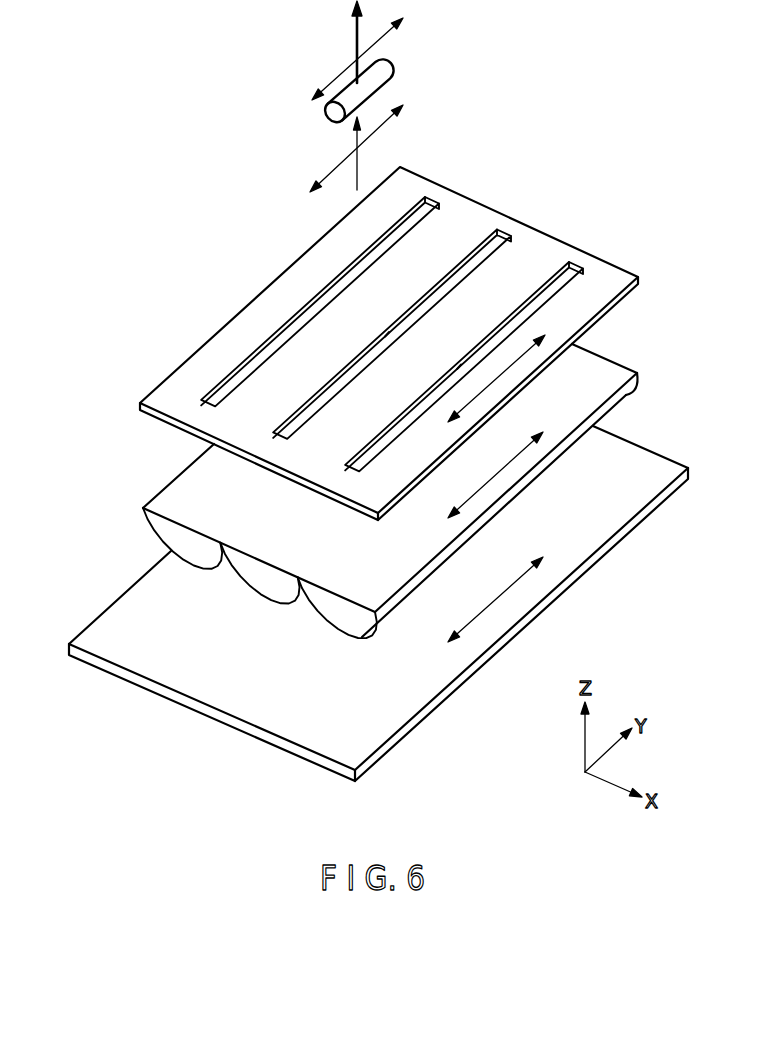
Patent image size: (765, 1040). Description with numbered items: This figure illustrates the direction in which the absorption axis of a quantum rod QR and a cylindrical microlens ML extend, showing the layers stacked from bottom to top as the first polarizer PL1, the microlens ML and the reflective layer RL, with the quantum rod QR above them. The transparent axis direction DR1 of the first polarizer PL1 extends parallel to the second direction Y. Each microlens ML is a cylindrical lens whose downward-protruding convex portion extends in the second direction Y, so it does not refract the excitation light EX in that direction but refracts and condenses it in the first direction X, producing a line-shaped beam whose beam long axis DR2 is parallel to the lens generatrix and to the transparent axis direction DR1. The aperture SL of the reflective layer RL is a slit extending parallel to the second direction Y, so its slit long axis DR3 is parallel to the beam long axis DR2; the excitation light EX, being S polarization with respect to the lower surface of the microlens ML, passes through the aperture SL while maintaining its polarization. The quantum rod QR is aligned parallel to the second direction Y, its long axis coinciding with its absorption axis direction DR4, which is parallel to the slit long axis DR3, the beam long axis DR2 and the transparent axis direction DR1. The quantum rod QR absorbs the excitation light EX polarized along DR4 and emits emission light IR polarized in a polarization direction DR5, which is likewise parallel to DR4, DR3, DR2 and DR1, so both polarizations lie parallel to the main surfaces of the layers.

The first polarizer PL1 is at (103, 627).
The microlens ML is at (170, 498).
The reflective layer RL is at (163, 398).
The aperture SL is at (431, 198).
The transparent axis direction DR1 is at (500, 595).
The beam long axis DR2 is at (500, 472).
The slit long axis DR3 is at (500, 377).
The absorption axis direction DR4 is at (383, 130).
The polarization direction DR5 is at (380, 43).
The quantum rod QR is at (332, 115).
The emission light IR is at (355, 35).
The excitation light EX is at (353, 143).